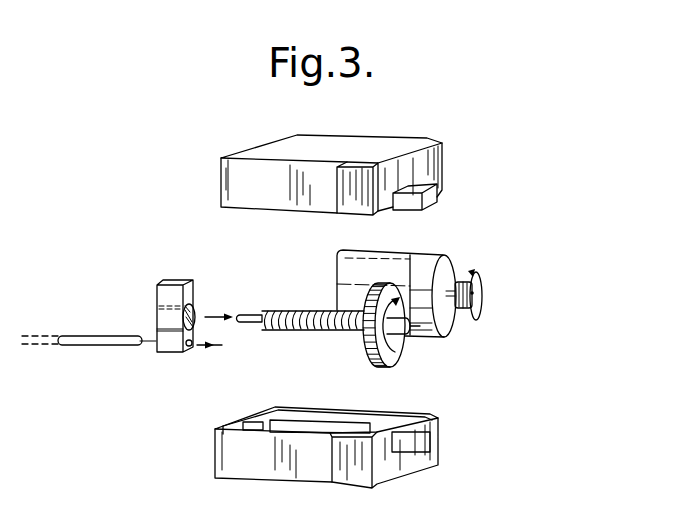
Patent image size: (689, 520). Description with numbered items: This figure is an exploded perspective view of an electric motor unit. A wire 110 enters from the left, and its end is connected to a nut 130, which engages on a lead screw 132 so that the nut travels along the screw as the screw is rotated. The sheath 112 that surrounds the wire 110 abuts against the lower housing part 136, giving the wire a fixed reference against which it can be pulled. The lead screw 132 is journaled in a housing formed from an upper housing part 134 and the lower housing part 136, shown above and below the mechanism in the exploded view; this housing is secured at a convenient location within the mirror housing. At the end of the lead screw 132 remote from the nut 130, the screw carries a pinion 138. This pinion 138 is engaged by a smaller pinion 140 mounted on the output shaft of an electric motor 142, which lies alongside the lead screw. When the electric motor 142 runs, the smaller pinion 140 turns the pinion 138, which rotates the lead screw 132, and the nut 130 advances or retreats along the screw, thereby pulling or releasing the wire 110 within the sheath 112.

The wire 110 is at (213, 346).
The sheath 112 is at (88, 338).
The nut 130 is at (190, 296).
The lead screw 132 is at (302, 331).
The upper housing part 134 is at (290, 147).
The lower housing part 136 is at (225, 458).
The pinion 138 is at (405, 360).
The smaller pinion 140 is at (477, 291).
The electric motor 142 is at (393, 261).